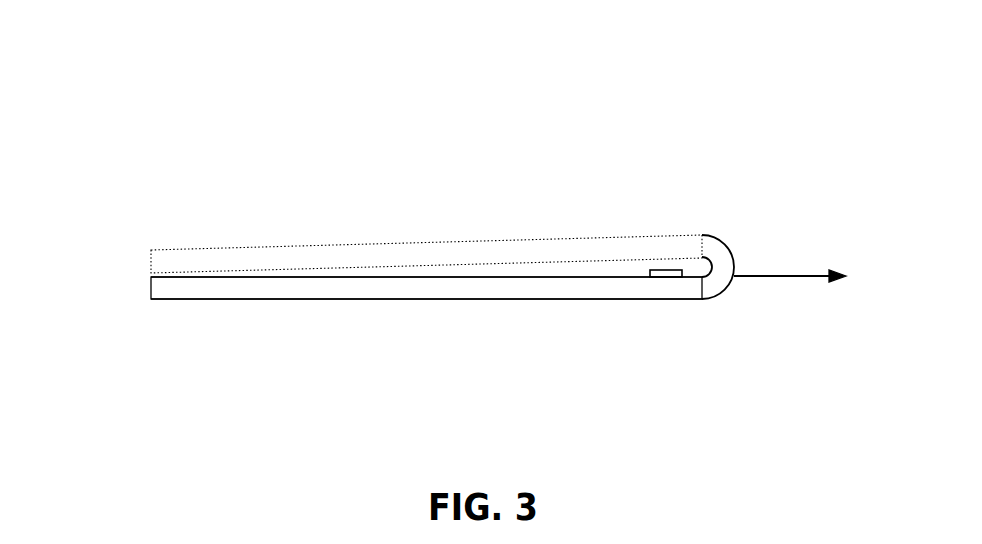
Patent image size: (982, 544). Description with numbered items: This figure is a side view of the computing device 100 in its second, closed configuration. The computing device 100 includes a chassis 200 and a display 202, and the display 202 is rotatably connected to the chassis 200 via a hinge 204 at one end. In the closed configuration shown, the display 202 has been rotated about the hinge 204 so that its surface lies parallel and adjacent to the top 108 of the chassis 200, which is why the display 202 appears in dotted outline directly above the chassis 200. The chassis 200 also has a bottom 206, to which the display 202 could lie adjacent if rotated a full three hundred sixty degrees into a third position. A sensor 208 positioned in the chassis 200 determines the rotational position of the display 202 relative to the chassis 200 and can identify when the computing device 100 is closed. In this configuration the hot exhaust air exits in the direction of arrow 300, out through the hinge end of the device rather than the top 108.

The computing device 100 is at (115, 195).
The top of the chassis 108 is at (556, 273).
The chassis 200 is at (646, 287).
The display 202 is at (307, 248).
The hinge 204 is at (720, 260).
The bottom of the chassis 206 is at (266, 298).
The sensor 208 is at (668, 271).
The arrow indicating exhaust air exit 300 is at (790, 295).